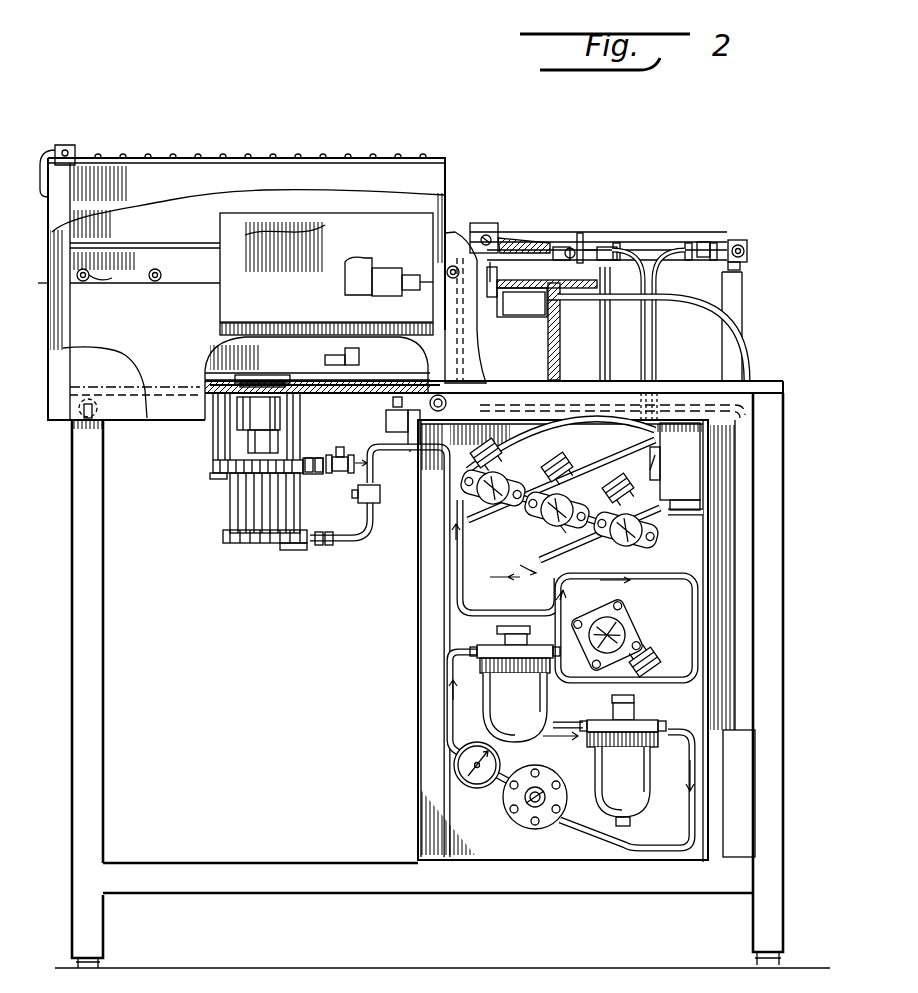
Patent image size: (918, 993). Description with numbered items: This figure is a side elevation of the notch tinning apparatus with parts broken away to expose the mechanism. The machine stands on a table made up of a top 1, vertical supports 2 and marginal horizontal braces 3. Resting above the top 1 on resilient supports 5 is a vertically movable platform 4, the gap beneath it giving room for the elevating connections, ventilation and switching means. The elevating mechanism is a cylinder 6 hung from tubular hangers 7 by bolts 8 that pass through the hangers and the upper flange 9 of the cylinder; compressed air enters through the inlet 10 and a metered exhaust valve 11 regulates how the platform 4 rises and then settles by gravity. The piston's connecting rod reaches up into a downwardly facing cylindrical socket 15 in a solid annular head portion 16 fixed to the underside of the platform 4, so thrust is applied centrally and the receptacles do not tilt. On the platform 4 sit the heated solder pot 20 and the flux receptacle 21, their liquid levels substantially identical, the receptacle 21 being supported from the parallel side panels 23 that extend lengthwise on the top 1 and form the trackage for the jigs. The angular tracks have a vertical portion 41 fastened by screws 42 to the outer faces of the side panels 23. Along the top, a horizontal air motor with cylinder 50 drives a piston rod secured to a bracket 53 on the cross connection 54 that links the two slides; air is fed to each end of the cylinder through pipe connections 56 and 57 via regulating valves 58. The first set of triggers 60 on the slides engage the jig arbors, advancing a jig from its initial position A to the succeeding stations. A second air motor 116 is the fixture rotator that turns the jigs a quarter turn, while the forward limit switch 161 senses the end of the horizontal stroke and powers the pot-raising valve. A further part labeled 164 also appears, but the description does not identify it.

The table top 1 is at (762, 385).
The vertical supports 2 is at (75, 745).
The marginal horizontal braces 3 is at (170, 418).
The vertically movable platform 4 is at (400, 370).
The resilient supports 5 is at (331, 395).
The cylinder 6 is at (268, 528).
The tubular hangers 7 is at (217, 453).
The bolts 8 is at (215, 479).
The upper flange 9 is at (212, 469).
The compressed air inlet 10 is at (353, 540).
The metered exhaust valve 11 is at (338, 475).
The cylindrical socket 15 is at (250, 425).
The solid annular head portion 16 is at (262, 380).
The heated solder pot 20 is at (330, 335).
The flux receptacle 21 is at (385, 340).
The side panels 23 is at (182, 350).
The vertical portion of track 41 is at (181, 278).
The screws 42 is at (156, 283).
The cylinder of air motor 50 is at (665, 243).
The bracket 53 is at (588, 242).
The cross connection 54 is at (537, 243).
The pipe connection 56 is at (574, 244).
The pipe connection 57 is at (750, 253).
The regulating valves 58 is at (690, 240).
The first set of triggers 60 is at (522, 221).
The air motor 116 is at (383, 276).
The forward limit switch 161 is at (485, 270).
The plate 164 is at (430, 369).
The first jig A is at (482, 225).